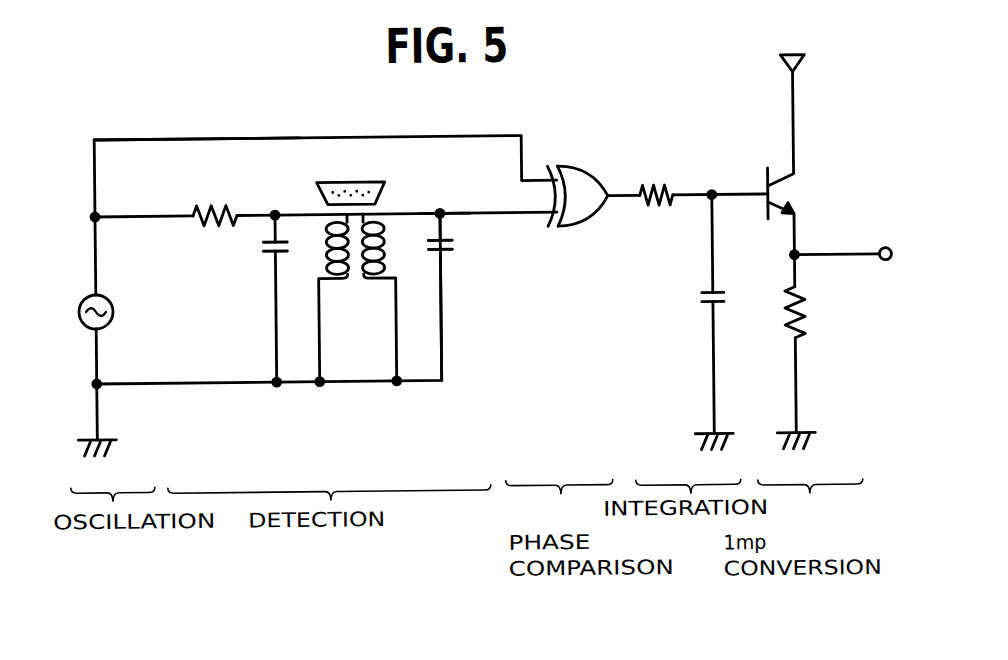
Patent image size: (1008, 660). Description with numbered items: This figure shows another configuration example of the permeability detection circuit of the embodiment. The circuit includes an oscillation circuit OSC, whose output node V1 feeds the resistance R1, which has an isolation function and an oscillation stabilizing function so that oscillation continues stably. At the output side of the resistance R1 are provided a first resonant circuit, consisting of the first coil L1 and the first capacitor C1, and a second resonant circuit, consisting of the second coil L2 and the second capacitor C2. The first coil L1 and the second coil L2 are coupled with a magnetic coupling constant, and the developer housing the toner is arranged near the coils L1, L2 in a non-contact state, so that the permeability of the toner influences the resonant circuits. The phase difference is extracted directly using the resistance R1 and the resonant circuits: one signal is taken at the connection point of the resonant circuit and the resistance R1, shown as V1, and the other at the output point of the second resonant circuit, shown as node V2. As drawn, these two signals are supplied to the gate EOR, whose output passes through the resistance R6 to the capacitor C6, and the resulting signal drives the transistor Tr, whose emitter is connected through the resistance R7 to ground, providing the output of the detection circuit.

The oscillator output voltage node V1 is at (194, 120).
The detection output voltage node V2 is at (445, 198).
The oscillator OSC is at (124, 301).
The resistance R1 is at (215, 201).
The first capacitor C1 is at (259, 299).
The first coil L1 is at (322, 298).
The second coil L2 is at (395, 298).
The second capacitor C2 is at (458, 297).
The exclusive OR gate (phase comparator) EOR is at (593, 212).
The integration resistor R6 is at (653, 179).
The integration capacitor C6 is at (694, 314).
The transistor Tr is at (801, 154).
The emitter resistor R7 is at (817, 343).